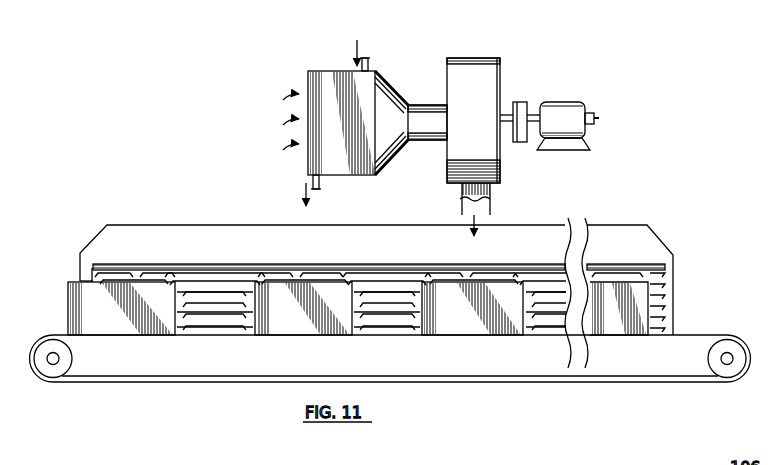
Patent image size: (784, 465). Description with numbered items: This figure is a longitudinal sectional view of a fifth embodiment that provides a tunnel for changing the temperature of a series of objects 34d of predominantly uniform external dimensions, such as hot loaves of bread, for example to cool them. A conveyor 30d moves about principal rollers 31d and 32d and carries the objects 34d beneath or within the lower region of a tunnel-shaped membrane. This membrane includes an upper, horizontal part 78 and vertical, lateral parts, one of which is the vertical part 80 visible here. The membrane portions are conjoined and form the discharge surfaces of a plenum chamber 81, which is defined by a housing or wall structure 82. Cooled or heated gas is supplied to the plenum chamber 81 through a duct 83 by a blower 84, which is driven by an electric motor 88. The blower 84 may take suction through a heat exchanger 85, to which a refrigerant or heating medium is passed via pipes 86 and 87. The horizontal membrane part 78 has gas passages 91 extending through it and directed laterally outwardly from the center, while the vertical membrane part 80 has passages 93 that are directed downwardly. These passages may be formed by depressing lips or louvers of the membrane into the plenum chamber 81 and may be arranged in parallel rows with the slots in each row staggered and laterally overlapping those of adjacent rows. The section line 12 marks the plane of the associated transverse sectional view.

The section line 12 is at (510, 48).
The conveyor 30d is at (218, 338).
The principal roller 31d is at (708, 359).
The principal roller 32d is at (72, 359).
The objects 34d is at (70, 294).
The upper horizontal membrane part 78 is at (88, 268).
The vertical lateral membrane part 80 is at (674, 287).
The plenum chamber 81 is at (357, 254).
The housing 82 is at (649, 236).
The duct 83 is at (490, 200).
The blower 84 is at (500, 165).
The heat exchanger 85 is at (324, 75).
The pipe 86 is at (370, 67).
The pipe 87 is at (320, 187).
The electric motor 88 is at (564, 104).
The gas passages 91 is at (208, 268).
The passages 93 is at (378, 338).